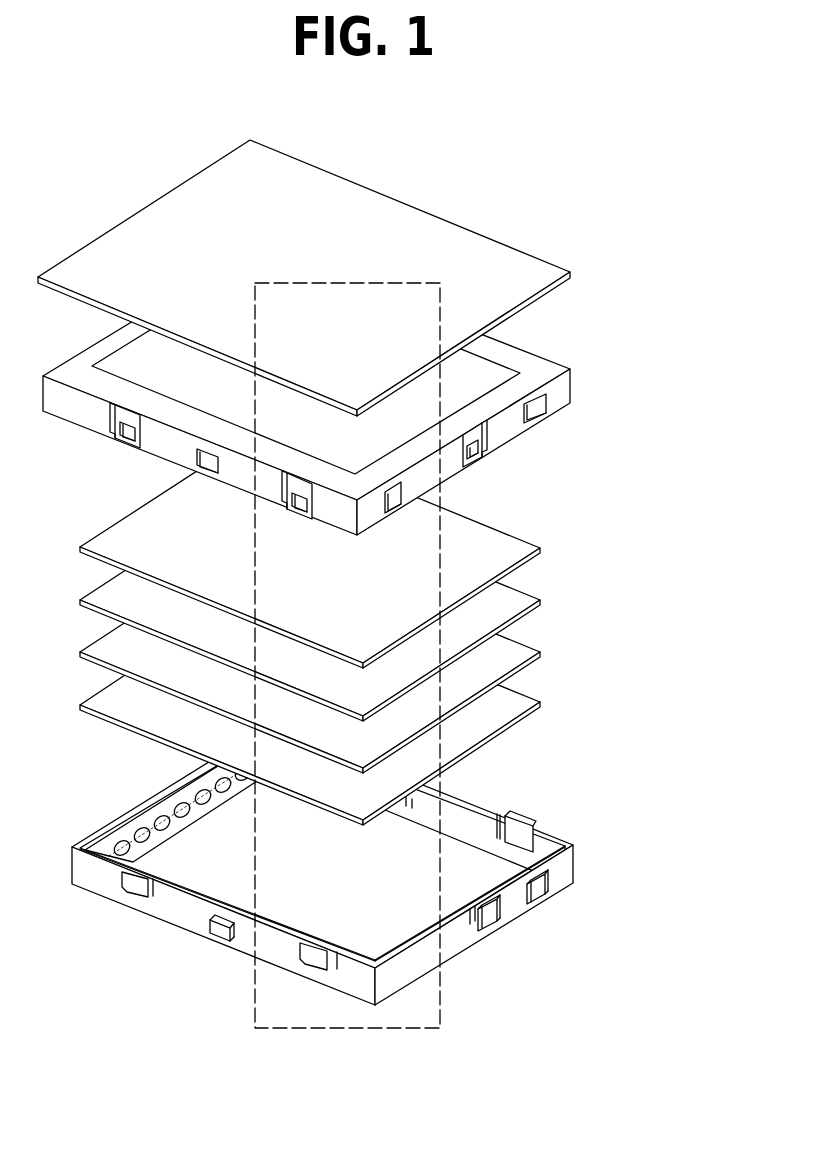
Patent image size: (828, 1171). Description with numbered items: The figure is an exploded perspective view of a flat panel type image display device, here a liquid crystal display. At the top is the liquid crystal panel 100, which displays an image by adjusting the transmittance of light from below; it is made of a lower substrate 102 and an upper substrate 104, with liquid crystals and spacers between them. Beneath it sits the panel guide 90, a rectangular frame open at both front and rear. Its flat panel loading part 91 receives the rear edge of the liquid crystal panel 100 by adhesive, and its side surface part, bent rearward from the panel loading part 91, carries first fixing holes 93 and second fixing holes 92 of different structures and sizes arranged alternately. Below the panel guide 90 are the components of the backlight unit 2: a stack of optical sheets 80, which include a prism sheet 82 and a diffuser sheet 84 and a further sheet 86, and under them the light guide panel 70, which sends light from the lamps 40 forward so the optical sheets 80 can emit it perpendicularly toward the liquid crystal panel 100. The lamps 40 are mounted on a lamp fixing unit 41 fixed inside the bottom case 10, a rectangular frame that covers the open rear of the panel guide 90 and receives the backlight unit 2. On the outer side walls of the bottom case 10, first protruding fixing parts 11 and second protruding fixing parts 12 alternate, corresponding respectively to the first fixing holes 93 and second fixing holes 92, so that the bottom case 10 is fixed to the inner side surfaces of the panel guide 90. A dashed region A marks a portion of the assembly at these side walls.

The backlight unit 2 is at (384, 718).
The bottom case 10 is at (363, 864).
The first protruding fixing part 11 is at (538, 892).
The second protruding fixing part 12 is at (496, 914).
The lamp 40 is at (161, 821).
The lamp fixing unit 41 is at (112, 834).
The light guide panel 70 is at (522, 704).
The optical sheets 80 is at (371, 602).
The prism sheet 82 is at (522, 651).
The diffuser sheet 84 is at (522, 599).
The protective sheet 86 is at (620, 635).
The panel guide 90 is at (362, 390).
The panel loading part 91 is at (306, 373).
The second fixing hole 92 is at (482, 440).
The first fixing hole 93 is at (548, 404).
The liquid crystal panel 100 is at (362, 278).
The lower substrate 102 is at (547, 283).
The upper substrate 104 is at (538, 270).
The enlarged region A is at (443, 999).